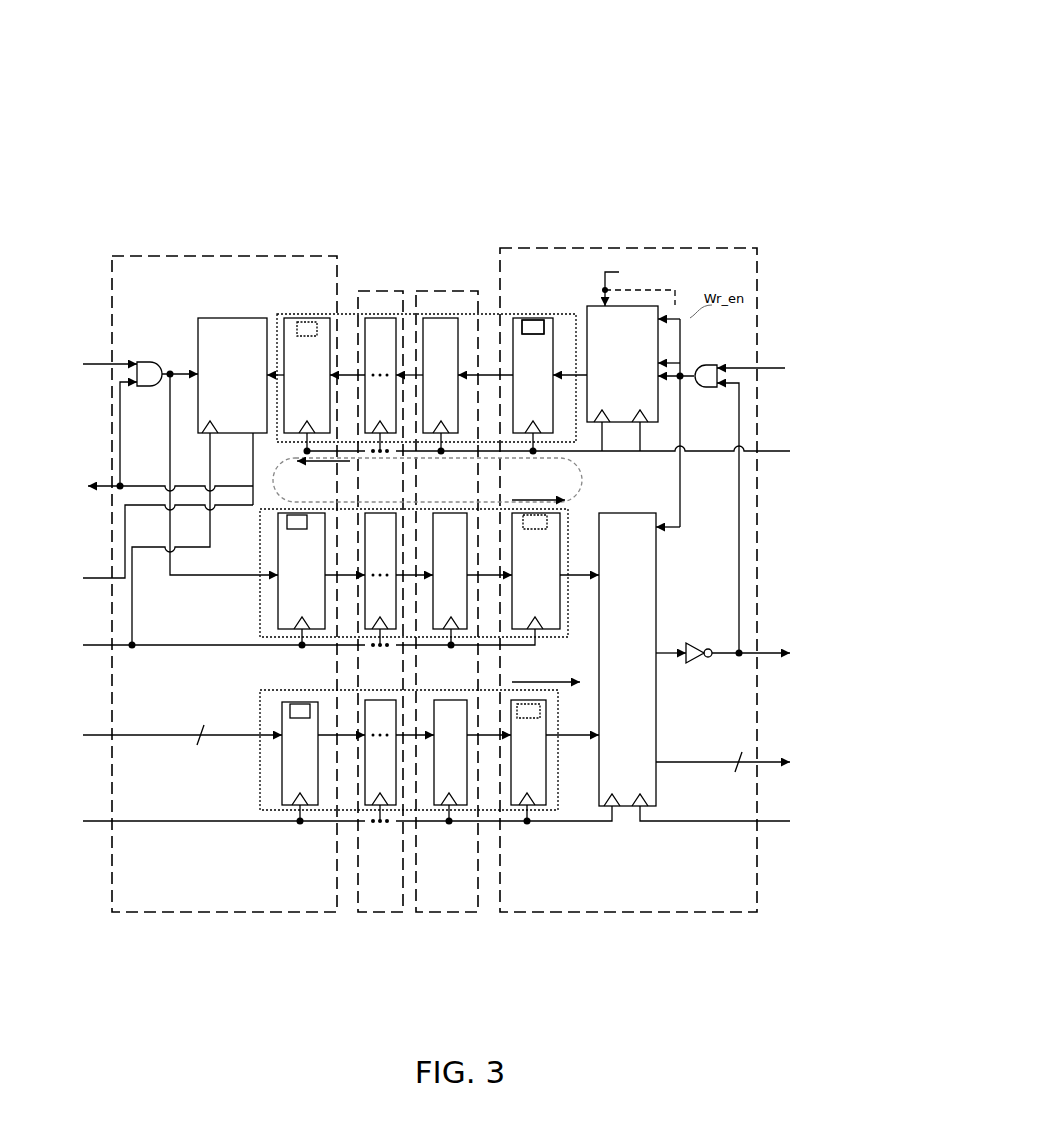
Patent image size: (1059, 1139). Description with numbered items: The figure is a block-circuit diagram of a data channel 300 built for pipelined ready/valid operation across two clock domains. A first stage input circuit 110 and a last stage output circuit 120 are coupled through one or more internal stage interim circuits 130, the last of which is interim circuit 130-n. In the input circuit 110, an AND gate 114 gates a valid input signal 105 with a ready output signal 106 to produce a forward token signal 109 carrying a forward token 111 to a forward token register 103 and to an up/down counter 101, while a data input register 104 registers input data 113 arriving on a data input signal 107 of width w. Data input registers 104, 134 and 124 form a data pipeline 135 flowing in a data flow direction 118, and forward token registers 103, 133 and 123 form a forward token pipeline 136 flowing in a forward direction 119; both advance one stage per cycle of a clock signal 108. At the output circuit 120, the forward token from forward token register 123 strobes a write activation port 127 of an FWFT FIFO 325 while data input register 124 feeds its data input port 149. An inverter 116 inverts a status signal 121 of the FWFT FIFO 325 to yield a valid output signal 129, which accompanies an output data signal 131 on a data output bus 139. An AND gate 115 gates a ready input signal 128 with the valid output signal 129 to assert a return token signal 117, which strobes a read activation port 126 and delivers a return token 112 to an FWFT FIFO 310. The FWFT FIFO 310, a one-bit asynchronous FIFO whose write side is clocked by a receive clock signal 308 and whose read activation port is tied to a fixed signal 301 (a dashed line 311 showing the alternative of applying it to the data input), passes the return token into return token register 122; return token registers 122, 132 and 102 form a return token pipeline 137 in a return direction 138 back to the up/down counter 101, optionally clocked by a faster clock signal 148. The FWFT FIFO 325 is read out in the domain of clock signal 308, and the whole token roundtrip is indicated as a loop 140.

The data channel 300 is at (756, 72).
The first stage input circuit 110 is at (183, 256).
The last stage output circuit 120 is at (617, 248).
The internal stage interim circuit 130 is at (478, 286).
The interim circuit n 130-n is at (470, 912).
The up/down counter 101 is at (232, 375).
The return token register 102 is at (307, 384).
The forward token register 103 is at (301, 579).
The data input register 104 is at (300, 761).
The valid input signal 105 is at (82, 373).
The ready output signal 106 is at (131, 448).
The data input signal 107 is at (154, 734).
The clock signal 108 is at (328, 635).
The clock signal 148 is at (130, 547).
The forward token signal 109 is at (150, 357).
The forward token 111 is at (280, 514).
The return token 112 is at (543, 318).
The input data 113 is at (297, 702).
The AND gate 114 is at (152, 390).
The AND gate 115 is at (700, 388).
The inverter 116 is at (692, 640).
The return token signal 117 is at (688, 376).
The data flow direction 118 is at (522, 682).
The forward direction 119 is at (522, 500).
The status signal 121 is at (668, 656).
The return token register 122 is at (533, 384).
The forward token register 123 is at (536, 571).
The data input register 124 is at (528, 760).
The read activation port 126 is at (643, 537).
The write activation port 127 is at (603, 587).
The ready input signal 128 is at (775, 358).
The valid output signal 129 is at (784, 534).
The output data signal 131 is at (755, 773).
The return token register 132 is at (440, 384).
The forward token register 133 is at (450, 579).
The data input register 134 is at (450, 760).
The data pipeline 135 is at (260, 770).
The forward token pipeline 136 is at (260, 596).
The return token pipeline 137 is at (310, 314).
The return direction 138 is at (305, 464).
The data output bus 139 is at (637, 766).
The loop 140 is at (588, 490).
The data input port 149 is at (588, 726).
The fixed signal 301 is at (619, 272).
The receive clock signal 308 is at (574, 642).
The FWFT FIFO 310 is at (622, 378).
The dashed line 311 is at (677, 300).
The FWFT FIFO 325 is at (627, 659).